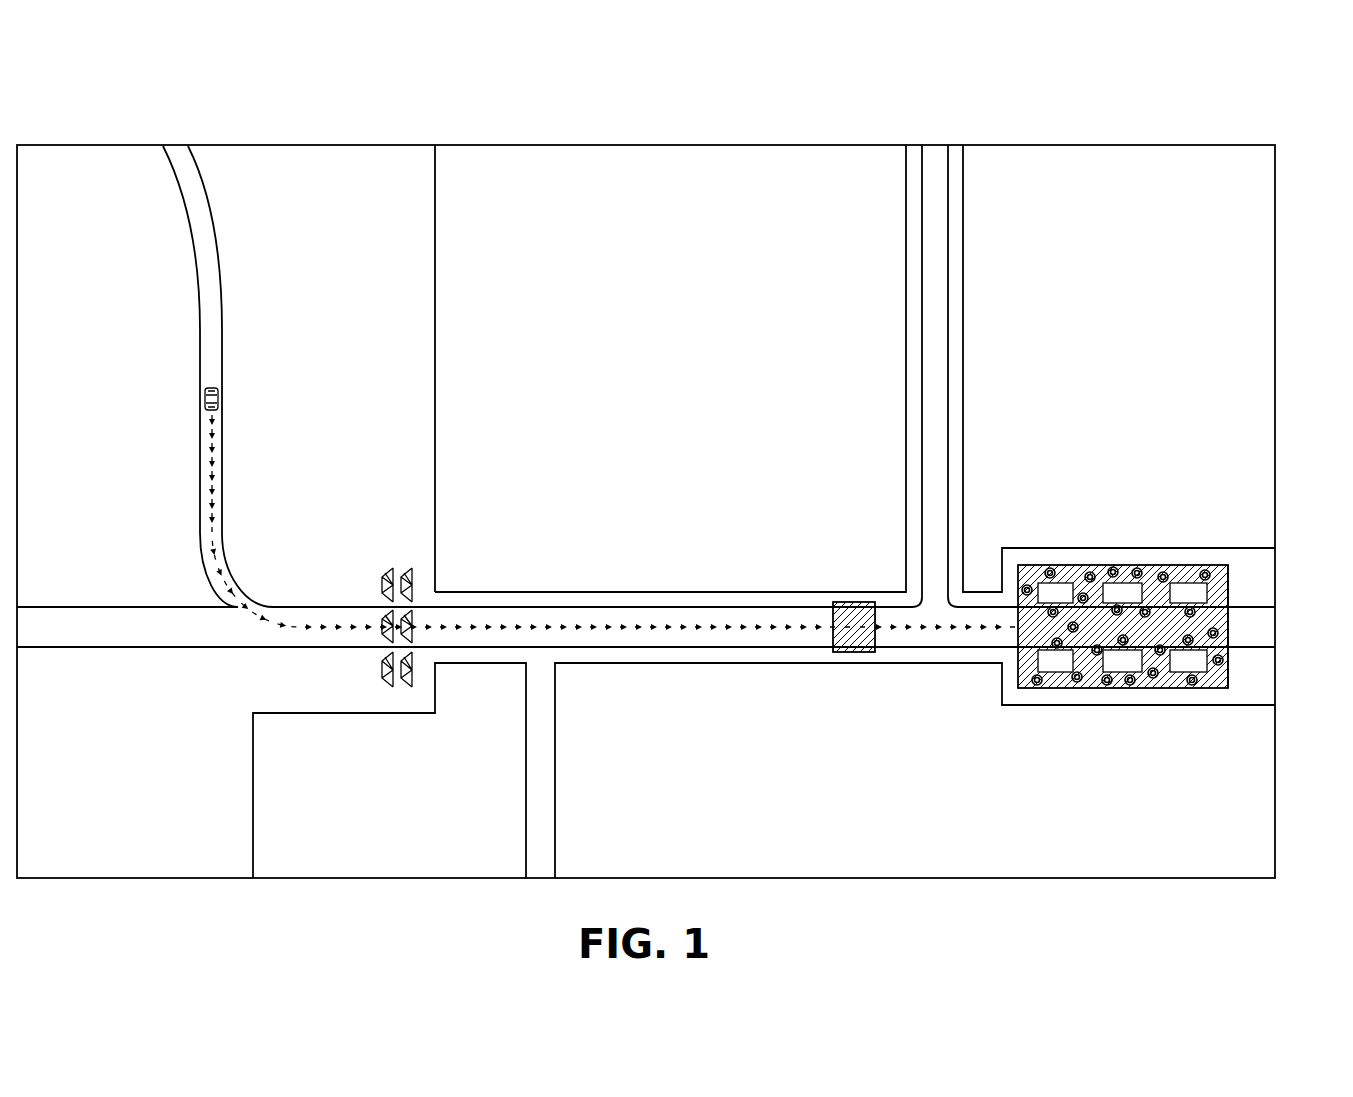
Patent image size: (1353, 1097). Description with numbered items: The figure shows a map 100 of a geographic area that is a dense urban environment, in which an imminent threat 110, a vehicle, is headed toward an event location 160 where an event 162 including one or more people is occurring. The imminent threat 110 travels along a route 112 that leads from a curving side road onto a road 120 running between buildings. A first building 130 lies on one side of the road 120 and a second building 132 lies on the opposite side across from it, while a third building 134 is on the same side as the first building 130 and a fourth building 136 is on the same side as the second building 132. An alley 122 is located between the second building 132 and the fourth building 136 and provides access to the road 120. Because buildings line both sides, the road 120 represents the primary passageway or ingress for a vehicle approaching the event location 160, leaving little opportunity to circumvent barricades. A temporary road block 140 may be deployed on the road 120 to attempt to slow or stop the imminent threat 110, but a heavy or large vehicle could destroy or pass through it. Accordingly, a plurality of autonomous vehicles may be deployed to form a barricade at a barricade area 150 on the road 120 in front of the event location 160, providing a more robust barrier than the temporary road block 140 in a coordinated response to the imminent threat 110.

The map 100 is at (1018, 128).
The imminent threat 110 is at (219, 398).
The route 112 is at (212, 500).
The road 120 is at (321, 607).
The alley 122 is at (934, 348).
The first building 130 is at (416, 802).
The second building 132 is at (696, 372).
The third building 134 is at (938, 791).
The fourth building 136 is at (1145, 374).
The temporary road block 140 is at (395, 556).
The barricade area 150 is at (852, 602).
The event location 160 is at (1088, 565).
The event 162 is at (1233, 663).